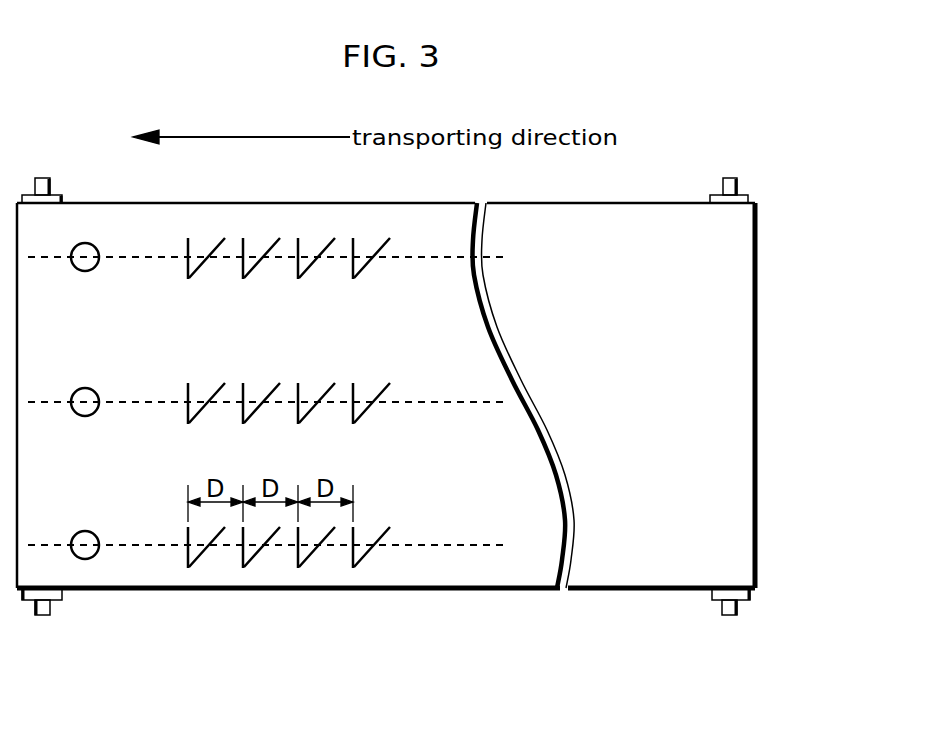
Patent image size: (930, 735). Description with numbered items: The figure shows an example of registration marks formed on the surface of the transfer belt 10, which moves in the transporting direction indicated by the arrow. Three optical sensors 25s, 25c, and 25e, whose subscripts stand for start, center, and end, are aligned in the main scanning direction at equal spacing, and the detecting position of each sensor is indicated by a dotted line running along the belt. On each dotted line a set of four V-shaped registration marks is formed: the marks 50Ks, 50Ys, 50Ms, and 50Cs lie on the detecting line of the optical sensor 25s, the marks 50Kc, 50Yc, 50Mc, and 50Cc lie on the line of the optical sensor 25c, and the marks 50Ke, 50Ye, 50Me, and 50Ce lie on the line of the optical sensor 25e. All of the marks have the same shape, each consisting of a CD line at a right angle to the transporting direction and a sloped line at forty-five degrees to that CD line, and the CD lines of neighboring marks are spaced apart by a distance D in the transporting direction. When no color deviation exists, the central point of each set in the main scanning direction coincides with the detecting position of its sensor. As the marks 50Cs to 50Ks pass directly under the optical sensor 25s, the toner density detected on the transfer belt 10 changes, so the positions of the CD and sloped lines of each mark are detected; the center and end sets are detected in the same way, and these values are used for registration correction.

The transfer belt 10 is at (572, 218).
The optical sensor 25e is at (94, 247).
The optical sensor 25c is at (90, 389).
The optical sensor 25s is at (92, 532).
The registration mark 50Ke is at (199, 268).
The registration mark 50Ye is at (254, 268).
The registration mark 50Me is at (305, 270).
The registration mark 50Ce is at (363, 270).
The registration mark 50Kc is at (199, 413).
The registration mark 50Yc is at (254, 413).
The registration mark 50Mc is at (305, 415).
The registration mark 50Cc is at (363, 415).
The registration mark 50Ks is at (205, 558).
The registration mark 50Ys is at (258, 560).
The registration mark 50Ms is at (313, 558).
The registration mark 50Cs is at (370, 558).